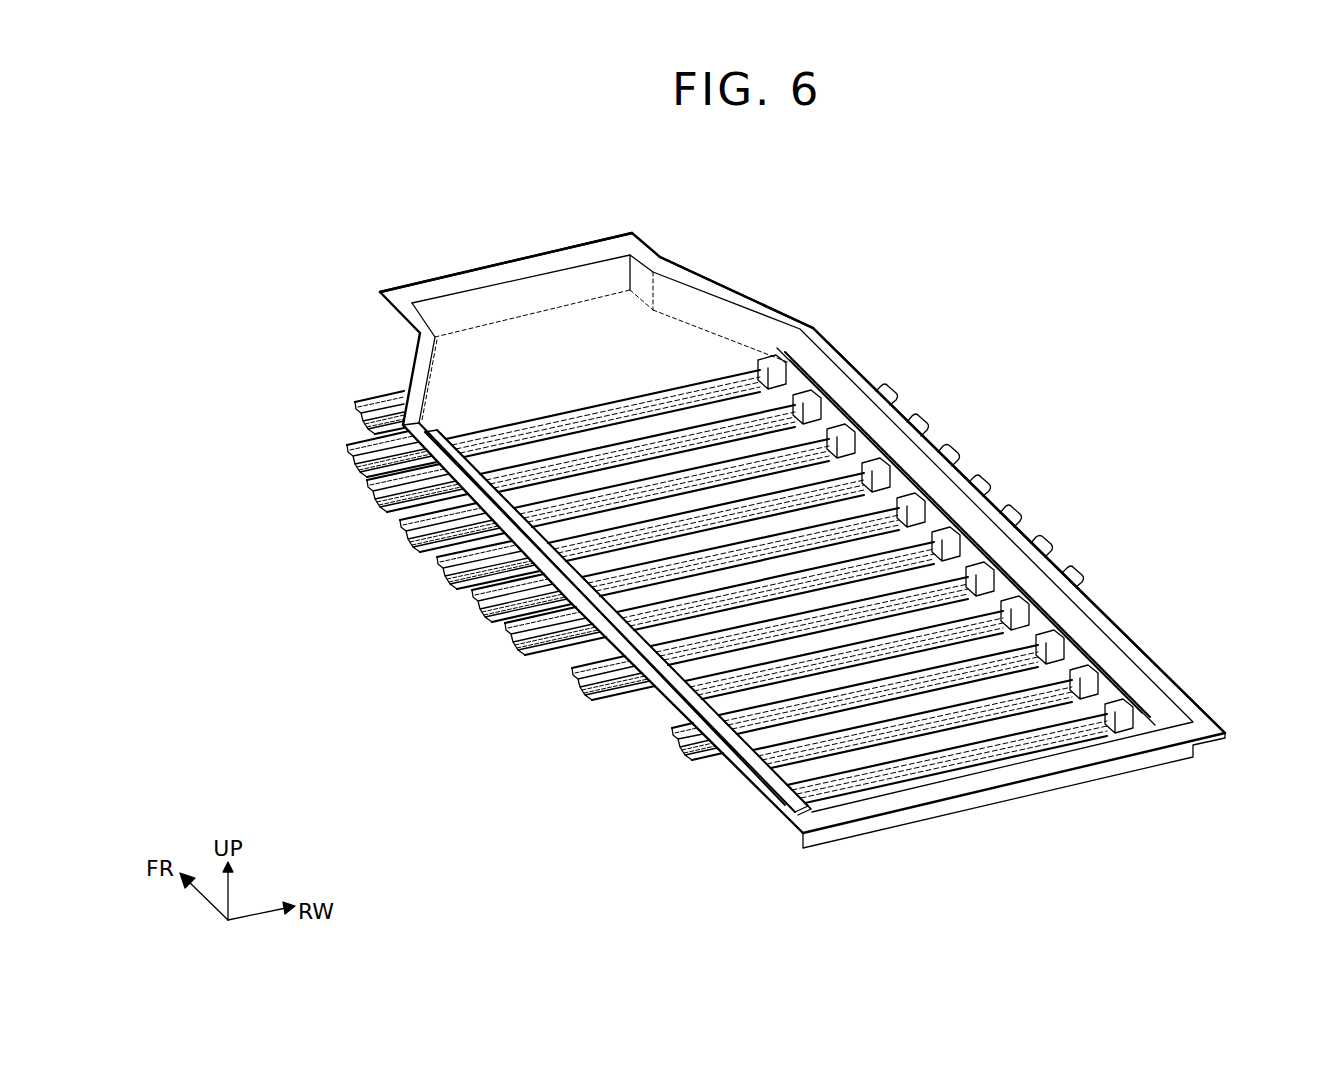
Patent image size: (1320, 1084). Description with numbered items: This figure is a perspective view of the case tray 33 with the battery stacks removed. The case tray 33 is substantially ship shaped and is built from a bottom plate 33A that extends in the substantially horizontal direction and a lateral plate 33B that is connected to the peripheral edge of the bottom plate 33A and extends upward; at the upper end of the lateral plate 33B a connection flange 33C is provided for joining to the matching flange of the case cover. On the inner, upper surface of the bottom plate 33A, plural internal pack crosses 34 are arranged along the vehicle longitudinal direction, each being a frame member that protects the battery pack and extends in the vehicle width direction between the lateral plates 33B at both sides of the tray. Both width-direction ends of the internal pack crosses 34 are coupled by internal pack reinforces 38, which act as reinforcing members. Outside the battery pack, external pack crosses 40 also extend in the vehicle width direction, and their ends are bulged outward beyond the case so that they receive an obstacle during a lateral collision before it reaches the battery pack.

The case tray 33 is at (466, 268).
The bottom plate 33A is at (672, 342).
The lateral plate 33B is at (668, 292).
The connection flange 33C is at (609, 242).
The internal pack cross 34 is at (750, 368).
The internal pack reinforce 38 is at (1137, 717).
The external pack cross 40 is at (361, 420).